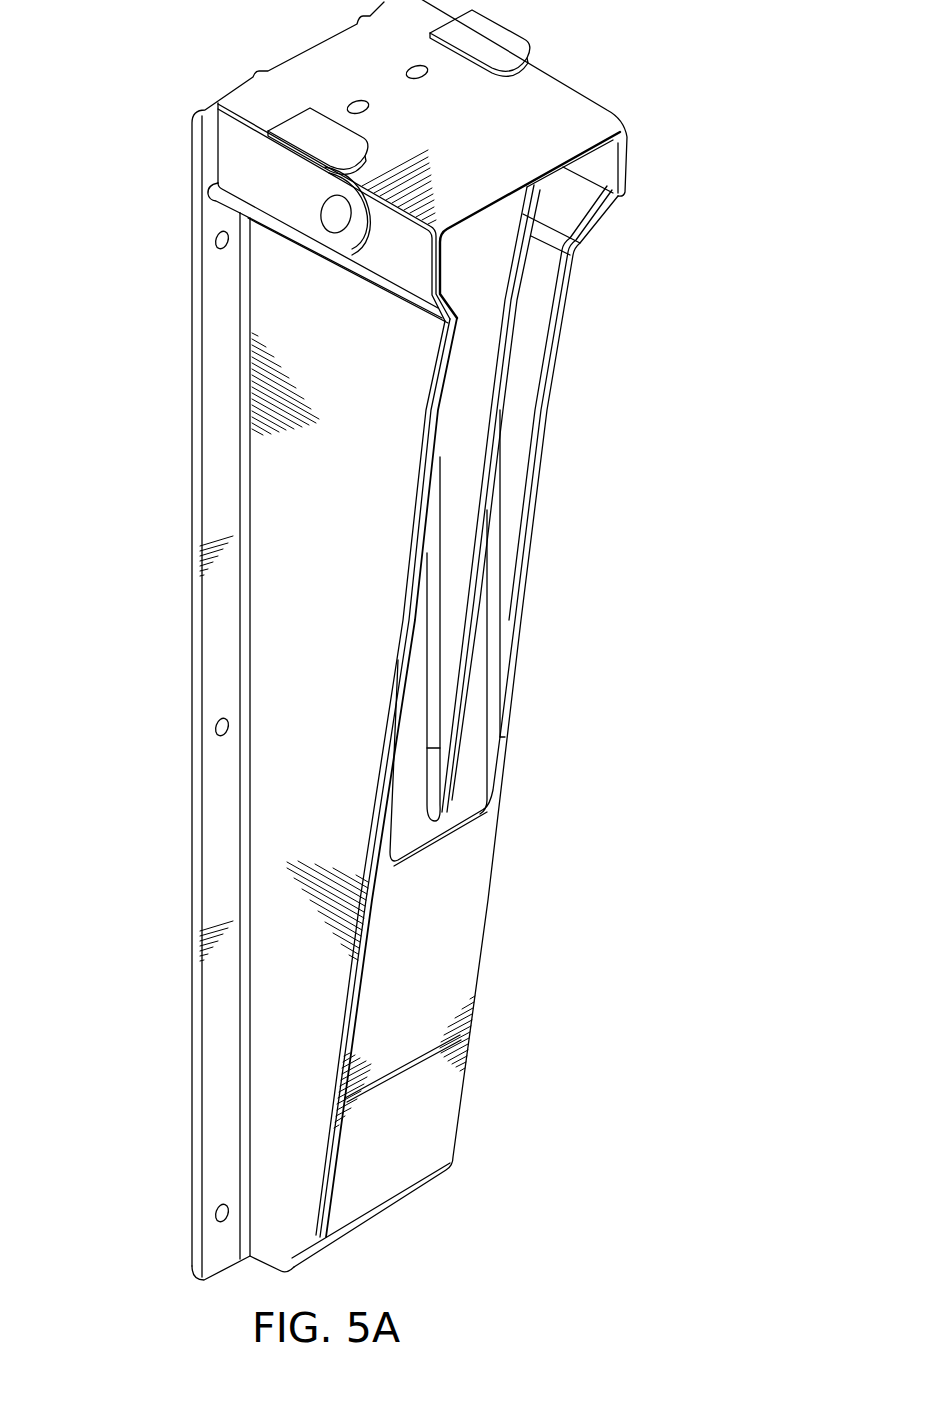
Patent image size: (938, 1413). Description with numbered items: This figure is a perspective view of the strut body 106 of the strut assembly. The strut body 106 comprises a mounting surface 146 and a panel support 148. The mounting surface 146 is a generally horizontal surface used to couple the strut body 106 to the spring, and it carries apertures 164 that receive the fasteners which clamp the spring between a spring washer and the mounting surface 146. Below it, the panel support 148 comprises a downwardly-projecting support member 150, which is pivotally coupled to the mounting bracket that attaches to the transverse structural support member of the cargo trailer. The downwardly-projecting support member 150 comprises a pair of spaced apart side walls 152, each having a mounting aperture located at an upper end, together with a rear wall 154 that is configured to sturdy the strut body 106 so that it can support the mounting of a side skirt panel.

The strut body 106 is at (104, 63).
The mounting surface 146 is at (553, 93).
The panel support 148 is at (183, 814).
The downwardly-projecting support member 150 is at (188, 1045).
The side walls 152 is at (340, 609).
The rear wall 154 is at (473, 932).
The apertures 164 is at (369, 110).